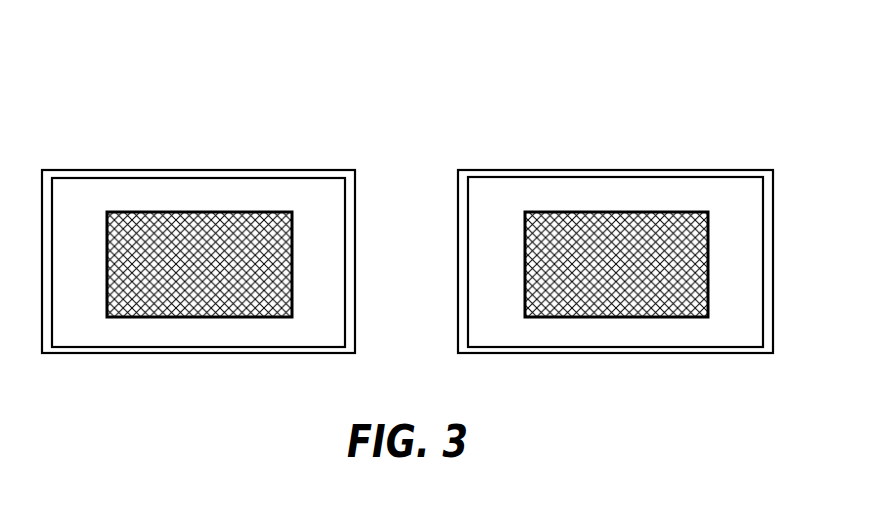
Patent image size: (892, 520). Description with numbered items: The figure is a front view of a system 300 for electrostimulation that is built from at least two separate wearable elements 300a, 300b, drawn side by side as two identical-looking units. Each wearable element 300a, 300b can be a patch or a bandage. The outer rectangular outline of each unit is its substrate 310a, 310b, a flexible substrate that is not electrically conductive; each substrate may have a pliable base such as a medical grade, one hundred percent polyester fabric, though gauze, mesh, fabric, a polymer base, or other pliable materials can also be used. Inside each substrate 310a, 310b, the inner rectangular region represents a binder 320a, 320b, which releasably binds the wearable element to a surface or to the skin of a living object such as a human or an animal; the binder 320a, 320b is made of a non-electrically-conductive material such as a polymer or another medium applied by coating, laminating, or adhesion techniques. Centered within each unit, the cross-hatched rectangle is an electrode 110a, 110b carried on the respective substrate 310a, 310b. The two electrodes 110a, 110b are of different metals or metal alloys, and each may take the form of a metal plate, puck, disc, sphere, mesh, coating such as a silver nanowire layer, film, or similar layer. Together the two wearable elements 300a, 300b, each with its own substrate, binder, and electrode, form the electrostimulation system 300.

The system for electrostimulation 300 is at (101, 49).
The wearable element 300a is at (105, 370).
The wearable element 300b is at (609, 372).
The substrate 310a is at (320, 170).
The substrate 310b is at (742, 170).
The binder 320a is at (88, 217).
The binder 320b is at (503, 222).
The electrode 110a is at (193, 232).
The electrode 110b is at (620, 247).